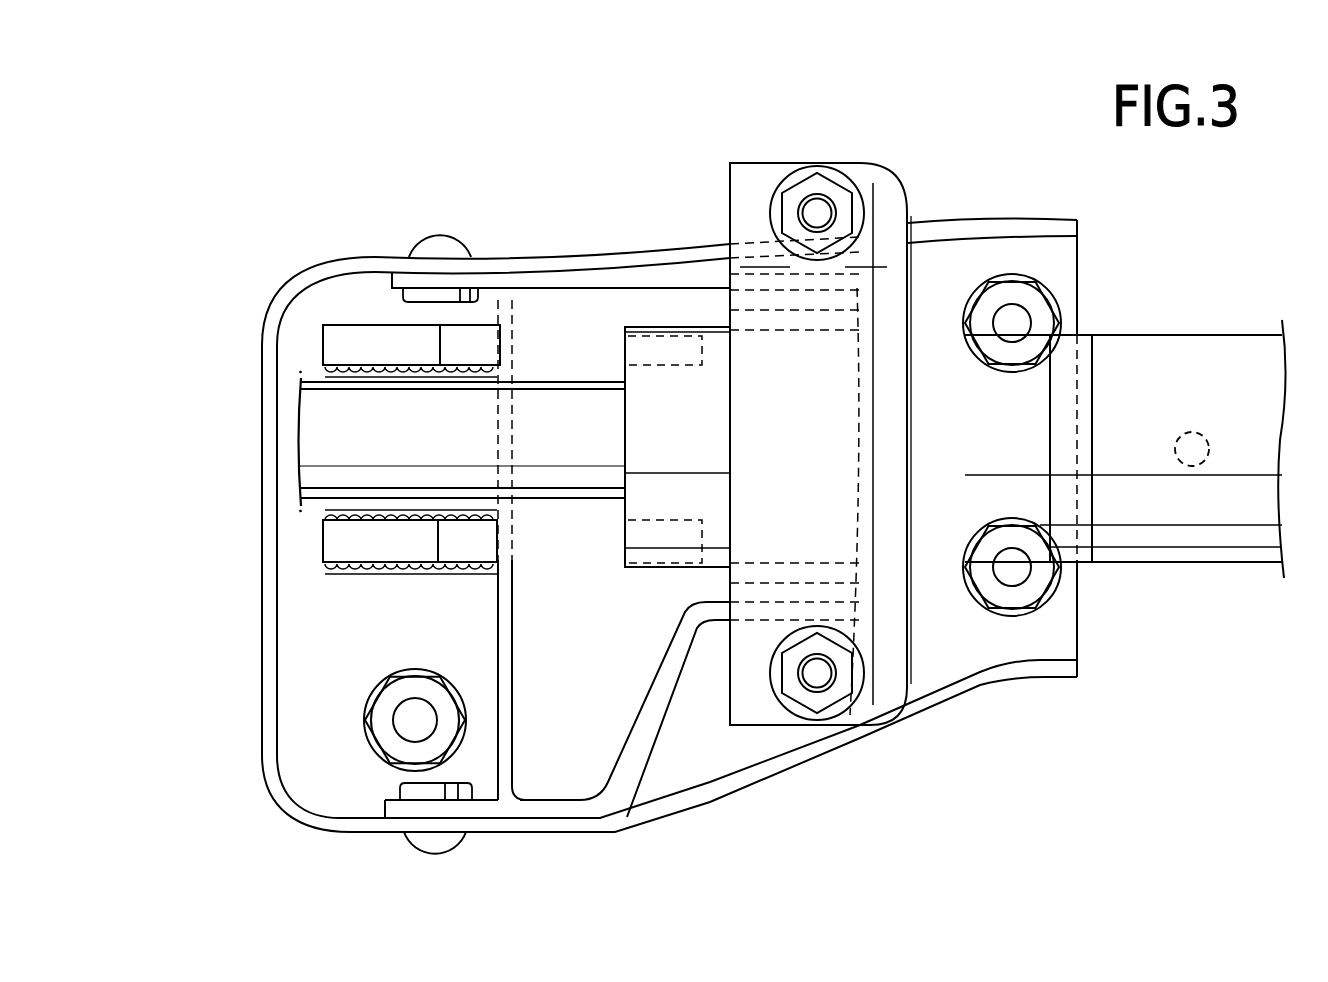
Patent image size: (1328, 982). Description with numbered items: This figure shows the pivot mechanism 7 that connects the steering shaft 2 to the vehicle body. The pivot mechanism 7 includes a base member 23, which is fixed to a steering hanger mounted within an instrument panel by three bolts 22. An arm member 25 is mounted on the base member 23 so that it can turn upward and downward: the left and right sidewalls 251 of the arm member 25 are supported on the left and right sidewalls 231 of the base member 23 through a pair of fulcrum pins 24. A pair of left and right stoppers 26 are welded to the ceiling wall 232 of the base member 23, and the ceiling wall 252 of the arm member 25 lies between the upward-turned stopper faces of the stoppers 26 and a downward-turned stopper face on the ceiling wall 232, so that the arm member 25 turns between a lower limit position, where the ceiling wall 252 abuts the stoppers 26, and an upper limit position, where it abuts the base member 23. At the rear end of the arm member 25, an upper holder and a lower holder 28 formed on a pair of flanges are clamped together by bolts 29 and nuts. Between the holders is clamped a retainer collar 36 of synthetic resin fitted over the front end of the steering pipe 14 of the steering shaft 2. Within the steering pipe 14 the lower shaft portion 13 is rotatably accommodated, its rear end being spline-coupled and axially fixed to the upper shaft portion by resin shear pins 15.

The steering shaft 2 is at (1172, 328).
The pivot mechanism 7 is at (690, 202).
The lower shaft portion 13 is at (300, 420).
The steering pipe 14 is at (1242, 352).
The shear pin 15 is at (1200, 434).
The bolt 22 is at (420, 716).
The base member 23 is at (952, 212).
The sidewall of base member 231 is at (718, 846).
The ceiling wall of base member 232 is at (320, 655).
The fulcrum pin 24 is at (437, 245).
The arm member 25 is at (680, 690).
The sidewall of arm member 251 is at (522, 280).
The ceiling wall of arm member 252 is at (530, 620).
The stopper 26 is at (540, 350).
The lower holder 28 is at (880, 426).
The bolt 29 is at (838, 205).
The retainer collar 36 is at (790, 330).